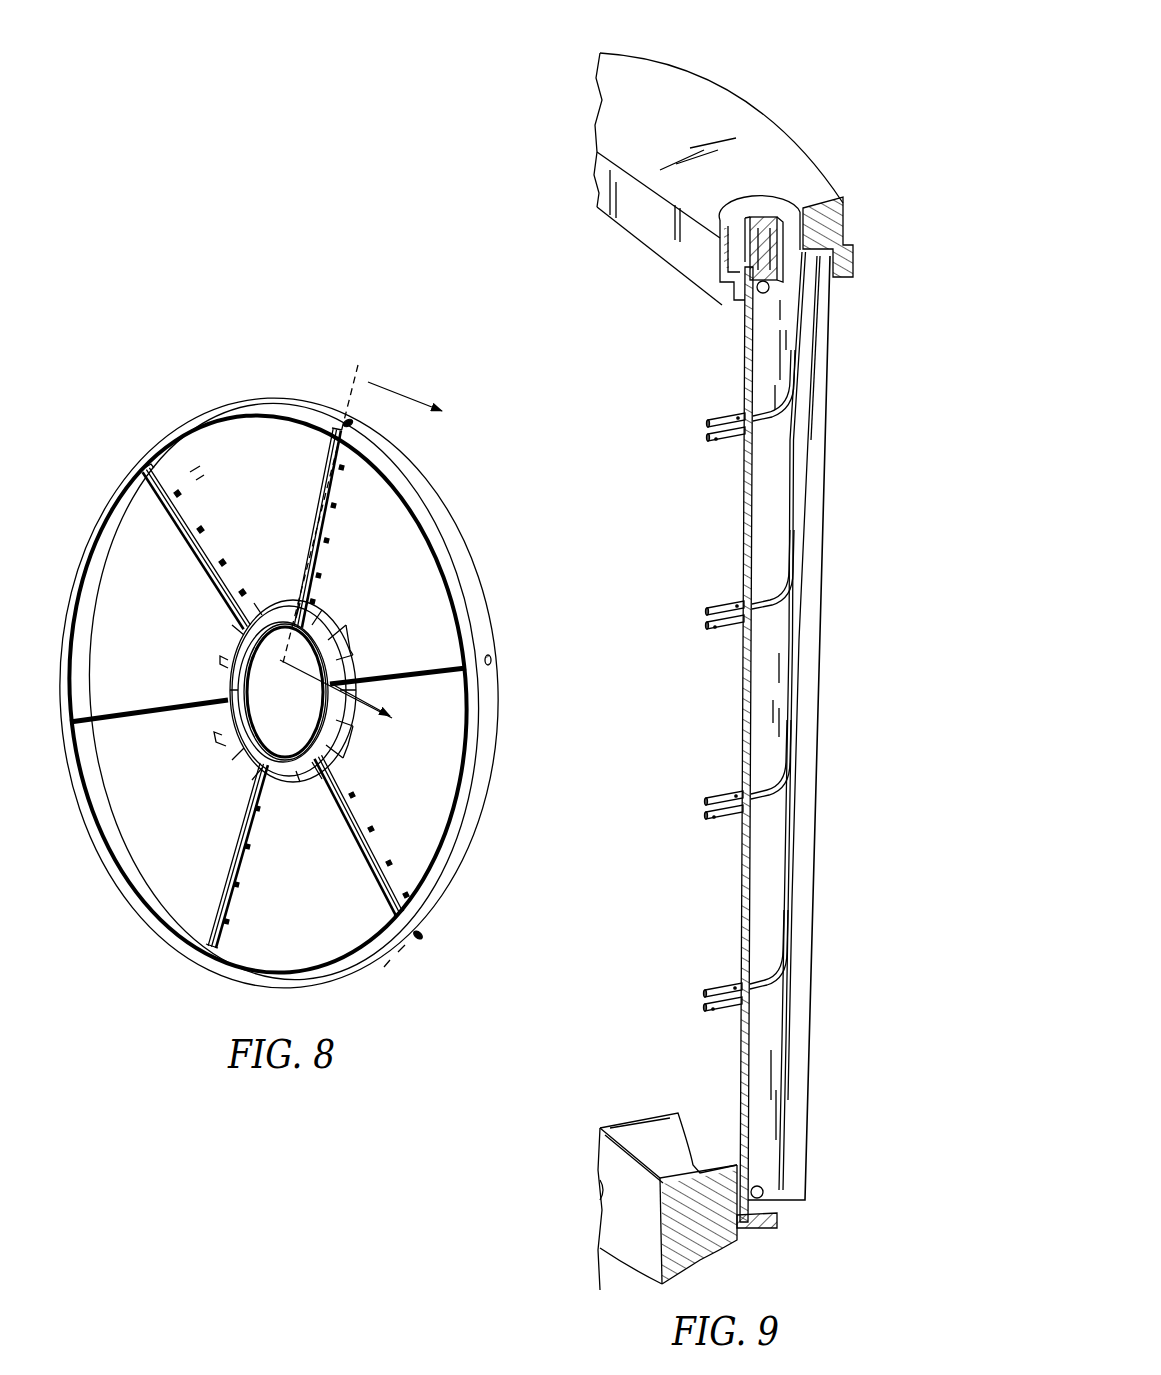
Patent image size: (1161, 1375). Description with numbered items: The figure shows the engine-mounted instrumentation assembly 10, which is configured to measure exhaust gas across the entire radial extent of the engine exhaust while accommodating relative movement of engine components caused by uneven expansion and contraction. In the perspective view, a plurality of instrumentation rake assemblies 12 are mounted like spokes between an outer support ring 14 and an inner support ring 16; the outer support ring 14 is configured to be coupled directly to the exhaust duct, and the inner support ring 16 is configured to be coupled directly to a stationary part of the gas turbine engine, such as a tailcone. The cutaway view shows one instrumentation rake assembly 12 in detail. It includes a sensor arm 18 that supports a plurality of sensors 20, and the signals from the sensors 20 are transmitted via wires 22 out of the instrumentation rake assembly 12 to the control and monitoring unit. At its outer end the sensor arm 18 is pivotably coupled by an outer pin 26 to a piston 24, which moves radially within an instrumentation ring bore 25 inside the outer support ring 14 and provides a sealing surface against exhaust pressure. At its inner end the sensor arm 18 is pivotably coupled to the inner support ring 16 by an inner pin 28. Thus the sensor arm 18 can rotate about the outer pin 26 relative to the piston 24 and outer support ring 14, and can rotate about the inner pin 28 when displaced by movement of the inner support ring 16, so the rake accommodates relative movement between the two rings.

In FIG. 8, the engine-mounted instrumentation assembly 10 is at (92, 462).
In FIG. 8, the instrumentation rake assembly 12 is at (346, 555).
In FIG. 9, the instrumentation rake assembly 12 is at (834, 630).
In FIG. 8, the outer support ring 14 is at (486, 640).
In FIG. 9, the outer support ring 14 is at (670, 118).
In FIG. 8, the inner support ring 16 is at (350, 762).
In FIG. 9, the inner support ring 16 is at (620, 1202).
In FIG. 9, the sensor arm 18 is at (814, 828).
In FIG. 9, the sensors 20 is at (716, 598).
In FIG. 9, the wires 22 is at (820, 457).
In FIG. 9, the piston 24 is at (754, 196).
In FIG. 9, the instrumentation ring bore 25 is at (812, 220).
In FIG. 9, the outer pin 26 is at (786, 292).
In FIG. 9, the inner pin 28 is at (777, 1195).